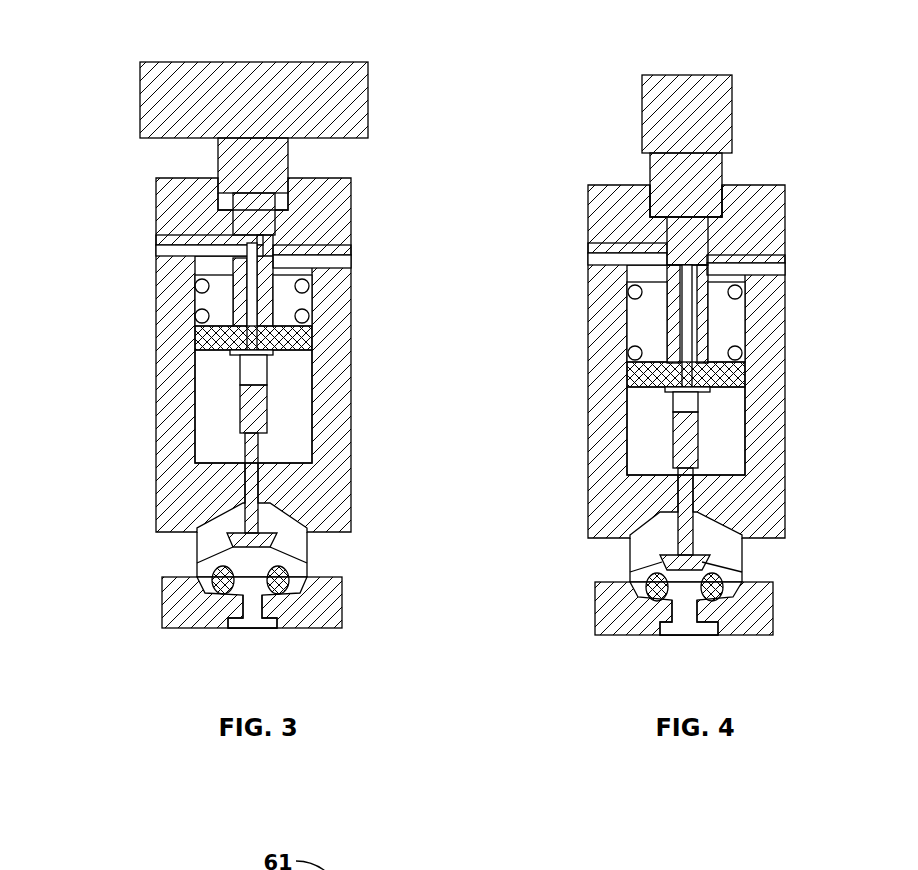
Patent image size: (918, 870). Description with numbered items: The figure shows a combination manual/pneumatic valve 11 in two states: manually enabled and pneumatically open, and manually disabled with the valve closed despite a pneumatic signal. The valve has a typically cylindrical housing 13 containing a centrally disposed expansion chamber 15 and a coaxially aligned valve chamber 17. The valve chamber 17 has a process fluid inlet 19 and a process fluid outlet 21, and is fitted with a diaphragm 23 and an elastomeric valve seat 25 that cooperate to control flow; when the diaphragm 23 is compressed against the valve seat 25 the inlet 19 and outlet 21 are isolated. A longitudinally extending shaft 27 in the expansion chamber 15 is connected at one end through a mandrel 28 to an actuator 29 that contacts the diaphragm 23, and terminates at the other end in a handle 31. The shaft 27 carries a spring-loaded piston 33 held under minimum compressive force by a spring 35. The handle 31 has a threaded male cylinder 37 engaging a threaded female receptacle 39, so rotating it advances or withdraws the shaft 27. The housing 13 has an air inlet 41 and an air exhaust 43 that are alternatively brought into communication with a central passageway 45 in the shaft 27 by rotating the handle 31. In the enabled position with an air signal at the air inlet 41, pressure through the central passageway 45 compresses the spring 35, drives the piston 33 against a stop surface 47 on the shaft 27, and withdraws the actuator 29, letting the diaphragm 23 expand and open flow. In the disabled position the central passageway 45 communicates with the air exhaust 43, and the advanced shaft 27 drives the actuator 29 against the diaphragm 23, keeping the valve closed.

In FIG. 3, the combination manual/pneumatic valve 11 is at (106, 36).
In FIG. 4, the combination manual/pneumatic valve 11 is at (578, 36).
In FIG. 3, the housing 13 is at (156, 507).
In FIG. 4, the housing 13 is at (588, 512).
In FIG. 3, the expansion chamber 15 is at (293, 407).
In FIG. 4, the expansion chamber 15 is at (727, 434).
In FIG. 3, the valve chamber 17 is at (293, 533).
In FIG. 4, the valve chamber 17 is at (727, 542).
In FIG. 3, the process fluid inlet 19 is at (252, 628).
In FIG. 4, the process fluid inlet 19 is at (685, 635).
In FIG. 3, the process fluid outlet 21 is at (305, 628).
In FIG. 4, the process fluid outlet 21 is at (740, 635).
In FIG. 3, the diaphragm 23 is at (198, 563).
In FIG. 4, the diaphragm 23 is at (632, 572).
In FIG. 3, the valve seat 25 is at (220, 625).
In FIG. 4, the valve seat 25 is at (658, 635).
In FIG. 3, the shaft 27 is at (233, 320).
In FIG. 4, the shaft 27 is at (667, 320).
In FIG. 3, the mandrel 28 is at (265, 428).
In FIG. 4, the mandrel 28 is at (698, 447).
In FIG. 3, the actuator 29 is at (285, 556).
In FIG. 4, the actuator 29 is at (718, 565).
In FIG. 3, the handle 31 is at (368, 100).
In FIG. 4, the handle 31 is at (735, 113).
In FIG. 3, the spring-loaded piston 33 is at (195, 357).
In FIG. 4, the spring-loaded piston 33 is at (628, 395).
In FIG. 3, the spring 35 is at (305, 286).
In FIG. 4, the spring 35 is at (738, 292).
In FIG. 3, the threaded male cylinder 37 is at (218, 170).
In FIG. 4, the threaded male cylinder 37 is at (722, 170).
In FIG. 3, the threaded female receptacle 39 is at (292, 200).
In FIG. 4, the threaded female receptacle 39 is at (745, 200).
In FIG. 3, the air inlet 41 is at (156, 250).
In FIG. 4, the air inlet 41 is at (588, 258).
In FIG. 3, the air exhaust 43 is at (351, 262).
In FIG. 4, the air exhaust 43 is at (785, 270).
In FIG. 3, the central passageway 45 is at (250, 305).
In FIG. 4, the central passageway 45 is at (683, 353).
In FIG. 3, the stop surface 47 is at (277, 348).
In FIG. 4, the stop surface 47 is at (710, 390).